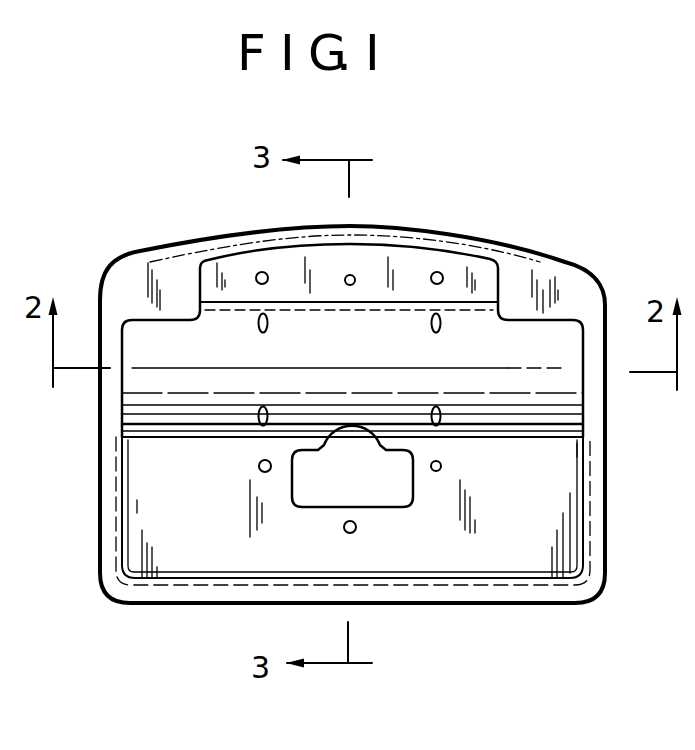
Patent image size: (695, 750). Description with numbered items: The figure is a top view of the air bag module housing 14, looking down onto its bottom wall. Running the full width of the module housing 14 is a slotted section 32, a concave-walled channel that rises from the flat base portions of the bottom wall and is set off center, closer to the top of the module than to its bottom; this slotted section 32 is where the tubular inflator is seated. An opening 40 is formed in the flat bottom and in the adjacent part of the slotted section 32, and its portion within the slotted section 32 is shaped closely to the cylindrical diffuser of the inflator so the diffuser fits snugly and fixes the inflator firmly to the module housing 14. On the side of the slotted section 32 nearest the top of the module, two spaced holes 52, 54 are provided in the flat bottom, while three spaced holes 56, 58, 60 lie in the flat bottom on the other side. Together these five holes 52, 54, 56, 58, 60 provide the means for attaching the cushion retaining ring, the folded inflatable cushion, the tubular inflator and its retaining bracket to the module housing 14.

The module housing 14 is at (527, 242).
The slotted section 32 is at (223, 420).
The opening 40 is at (402, 505).
The hole 52 is at (257, 271).
The hole 54 is at (436, 271).
The hole 56 is at (260, 471).
The hole 58 is at (343, 529).
The hole 60 is at (441, 467).